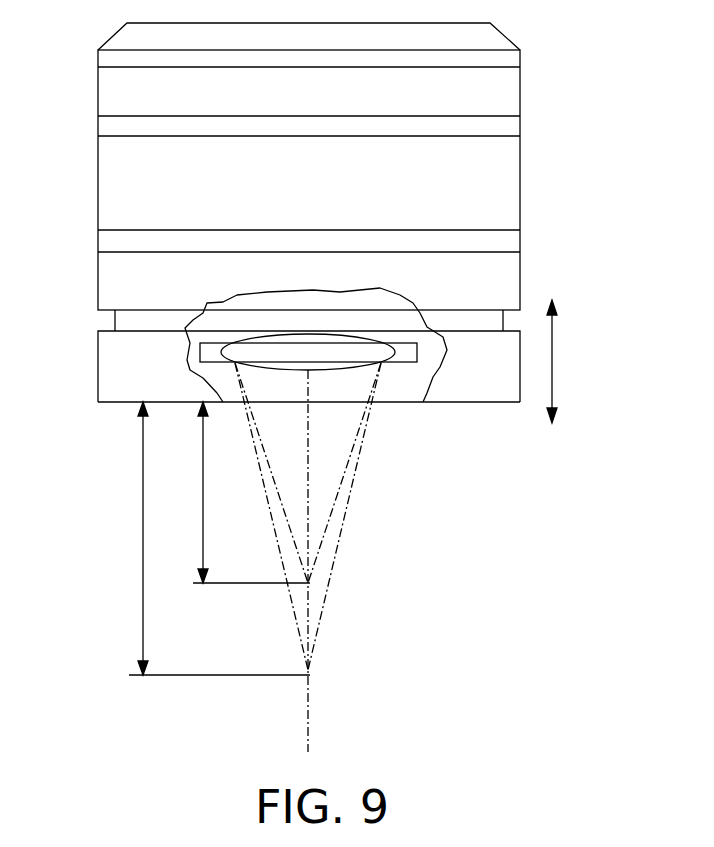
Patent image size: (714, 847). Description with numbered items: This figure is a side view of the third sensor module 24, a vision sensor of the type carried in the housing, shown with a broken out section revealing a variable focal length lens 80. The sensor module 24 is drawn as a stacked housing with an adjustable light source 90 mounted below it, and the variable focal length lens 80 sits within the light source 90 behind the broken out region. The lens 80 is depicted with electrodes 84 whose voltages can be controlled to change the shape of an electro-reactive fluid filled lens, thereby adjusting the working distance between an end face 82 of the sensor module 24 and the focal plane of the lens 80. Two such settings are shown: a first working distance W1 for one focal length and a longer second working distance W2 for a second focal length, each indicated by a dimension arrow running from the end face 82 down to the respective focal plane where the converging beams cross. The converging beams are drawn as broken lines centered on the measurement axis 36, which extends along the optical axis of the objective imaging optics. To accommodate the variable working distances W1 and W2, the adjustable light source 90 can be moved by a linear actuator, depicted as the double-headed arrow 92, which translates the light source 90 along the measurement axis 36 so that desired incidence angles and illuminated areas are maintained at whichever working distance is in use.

The third sensor module 24 is at (98, 177).
The adjustable light source 90 is at (98, 366).
The end face 82 is at (115, 403).
The electrodes 84 is at (405, 342).
The variable focal length lens 80 is at (335, 370).
The measurement axis 36 is at (310, 711).
The linear actuator 92 is at (552, 361).
The first working distance W1 is at (203, 492).
The second working distance W2 is at (143, 537).